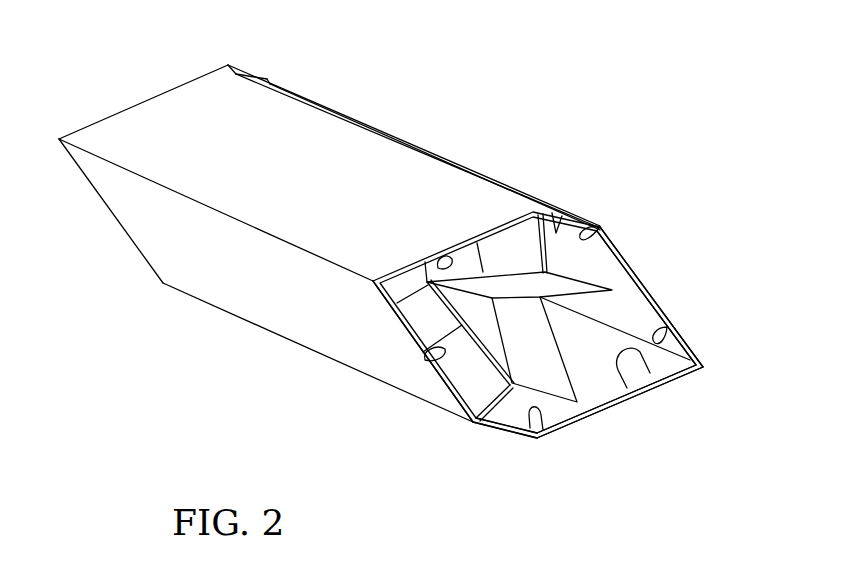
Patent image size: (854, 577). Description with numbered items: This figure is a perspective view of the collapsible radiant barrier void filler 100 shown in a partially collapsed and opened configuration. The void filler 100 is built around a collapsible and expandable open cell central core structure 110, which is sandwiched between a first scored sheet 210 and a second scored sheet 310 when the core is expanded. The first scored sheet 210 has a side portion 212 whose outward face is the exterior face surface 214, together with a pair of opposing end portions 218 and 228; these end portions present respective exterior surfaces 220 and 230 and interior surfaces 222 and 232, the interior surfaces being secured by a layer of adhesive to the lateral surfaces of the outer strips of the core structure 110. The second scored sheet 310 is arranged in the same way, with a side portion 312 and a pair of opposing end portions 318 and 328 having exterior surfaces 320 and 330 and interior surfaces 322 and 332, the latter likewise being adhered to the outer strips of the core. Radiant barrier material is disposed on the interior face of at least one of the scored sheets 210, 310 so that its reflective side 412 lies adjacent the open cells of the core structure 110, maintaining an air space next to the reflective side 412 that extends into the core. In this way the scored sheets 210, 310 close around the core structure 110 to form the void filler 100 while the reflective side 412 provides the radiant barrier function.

The collapsible radiant barrier void filler 100 is at (656, 106).
The open cell central core structure 110 is at (536, 321).
The first scored sheet 210 is at (226, 264).
The side portion 212 is at (290, 298).
The exterior face surface 214 is at (216, 173).
The end portion 218 is at (361, 110).
The exterior surface 220 is at (393, 138).
The interior surface 222 is at (557, 228).
The end portion 228 is at (491, 441).
The exterior surface 230 is at (485, 426).
The interior surface 232 is at (470, 424).
The second scored sheet 310 is at (665, 285).
The side portion 312 is at (628, 258).
The end portion 318 is at (460, 143).
The exterior surface 320 is at (488, 175).
The interior surface 322 is at (601, 226).
The end portion 328 is at (518, 451).
The exterior surface 330 is at (529, 443).
The interior surface 332 is at (540, 436).
The reflective side 412 is at (446, 262).